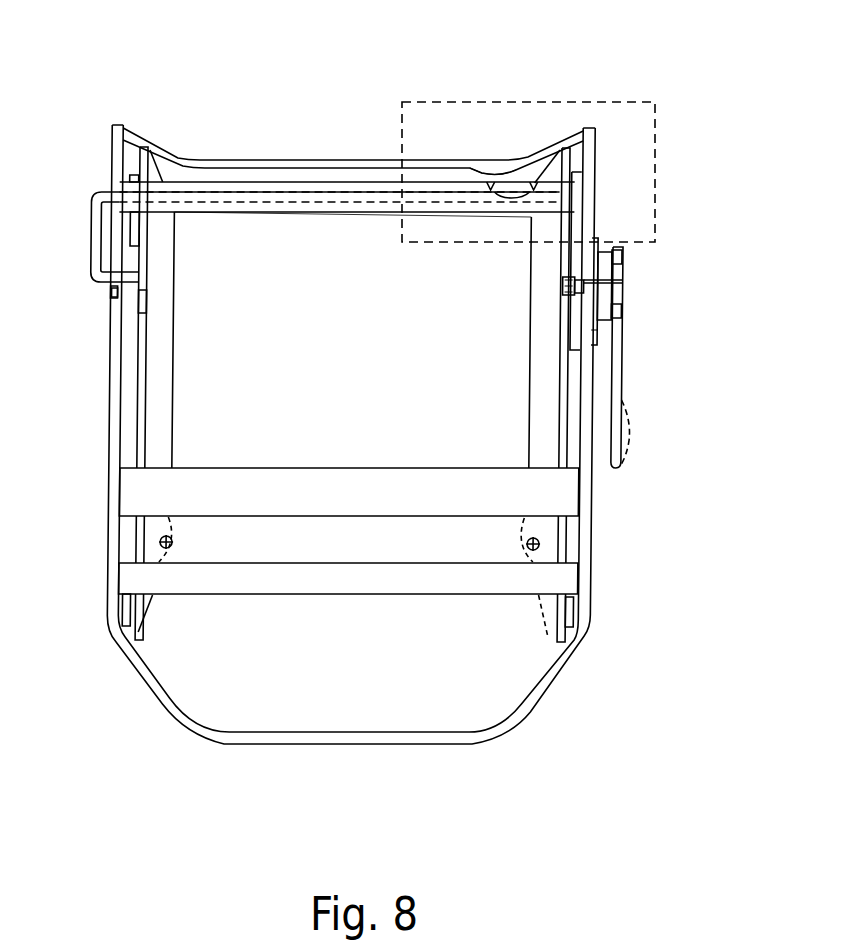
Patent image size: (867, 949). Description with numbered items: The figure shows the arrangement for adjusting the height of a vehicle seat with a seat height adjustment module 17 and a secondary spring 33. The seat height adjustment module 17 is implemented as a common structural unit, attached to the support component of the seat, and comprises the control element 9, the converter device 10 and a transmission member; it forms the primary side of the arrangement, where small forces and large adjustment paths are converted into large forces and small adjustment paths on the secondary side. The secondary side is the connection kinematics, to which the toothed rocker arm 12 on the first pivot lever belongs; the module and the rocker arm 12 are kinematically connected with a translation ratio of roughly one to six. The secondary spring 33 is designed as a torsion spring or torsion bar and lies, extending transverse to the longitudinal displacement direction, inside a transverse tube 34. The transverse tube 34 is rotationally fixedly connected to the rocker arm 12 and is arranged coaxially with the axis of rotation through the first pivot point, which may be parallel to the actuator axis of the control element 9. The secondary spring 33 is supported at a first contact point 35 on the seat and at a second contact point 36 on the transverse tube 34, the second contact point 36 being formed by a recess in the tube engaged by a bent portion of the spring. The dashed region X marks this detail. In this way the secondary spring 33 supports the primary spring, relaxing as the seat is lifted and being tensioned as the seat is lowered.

The control element 9 is at (624, 423).
The converter device 10 is at (606, 280).
The toothed rocker arm 12 is at (576, 205).
The seat height adjustment module 17 is at (662, 320).
The secondary spring 33 is at (96, 233).
The transverse tube 34 is at (273, 176).
The first contact point 35 is at (104, 298).
The second contact point 36 is at (491, 170).
The detail region X is at (533, 97).